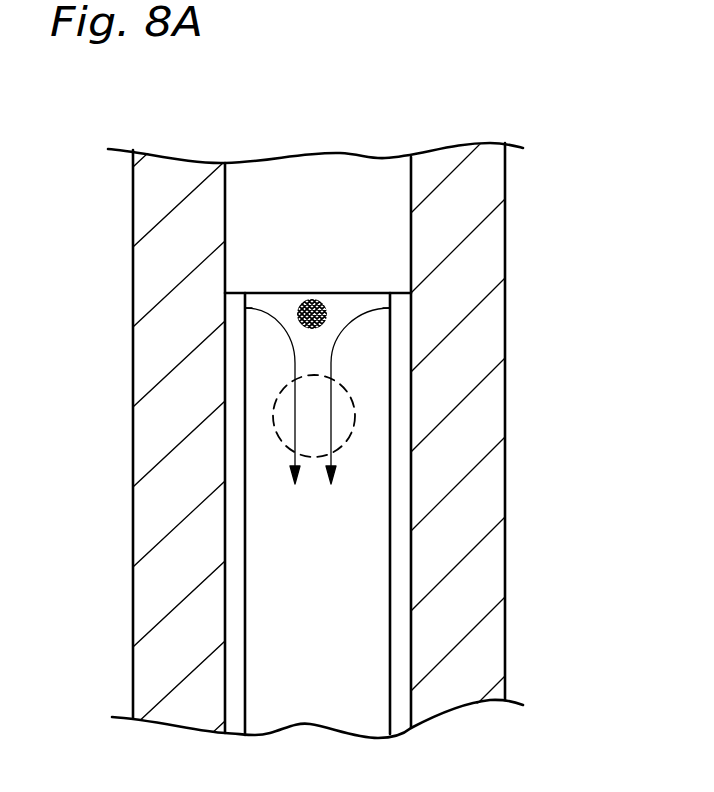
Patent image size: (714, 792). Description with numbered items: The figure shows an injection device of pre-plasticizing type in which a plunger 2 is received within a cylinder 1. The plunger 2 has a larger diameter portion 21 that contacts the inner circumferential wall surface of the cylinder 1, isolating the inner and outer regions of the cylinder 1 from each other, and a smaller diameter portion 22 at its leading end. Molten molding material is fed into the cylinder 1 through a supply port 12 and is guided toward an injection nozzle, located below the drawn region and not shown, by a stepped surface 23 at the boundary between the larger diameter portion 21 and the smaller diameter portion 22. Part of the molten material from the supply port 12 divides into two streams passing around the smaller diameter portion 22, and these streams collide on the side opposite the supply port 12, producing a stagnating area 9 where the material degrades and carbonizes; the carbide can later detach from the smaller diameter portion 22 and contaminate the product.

The cylinder 1 is at (495, 382).
The plunger 2 is at (244, 590).
The stagnating area 9 is at (328, 303).
The molding material supply port 12 is at (340, 445).
The larger diameter portion 21 is at (378, 235).
The smaller diameter portion 22 is at (353, 632).
The stepped surface 23 is at (233, 299).